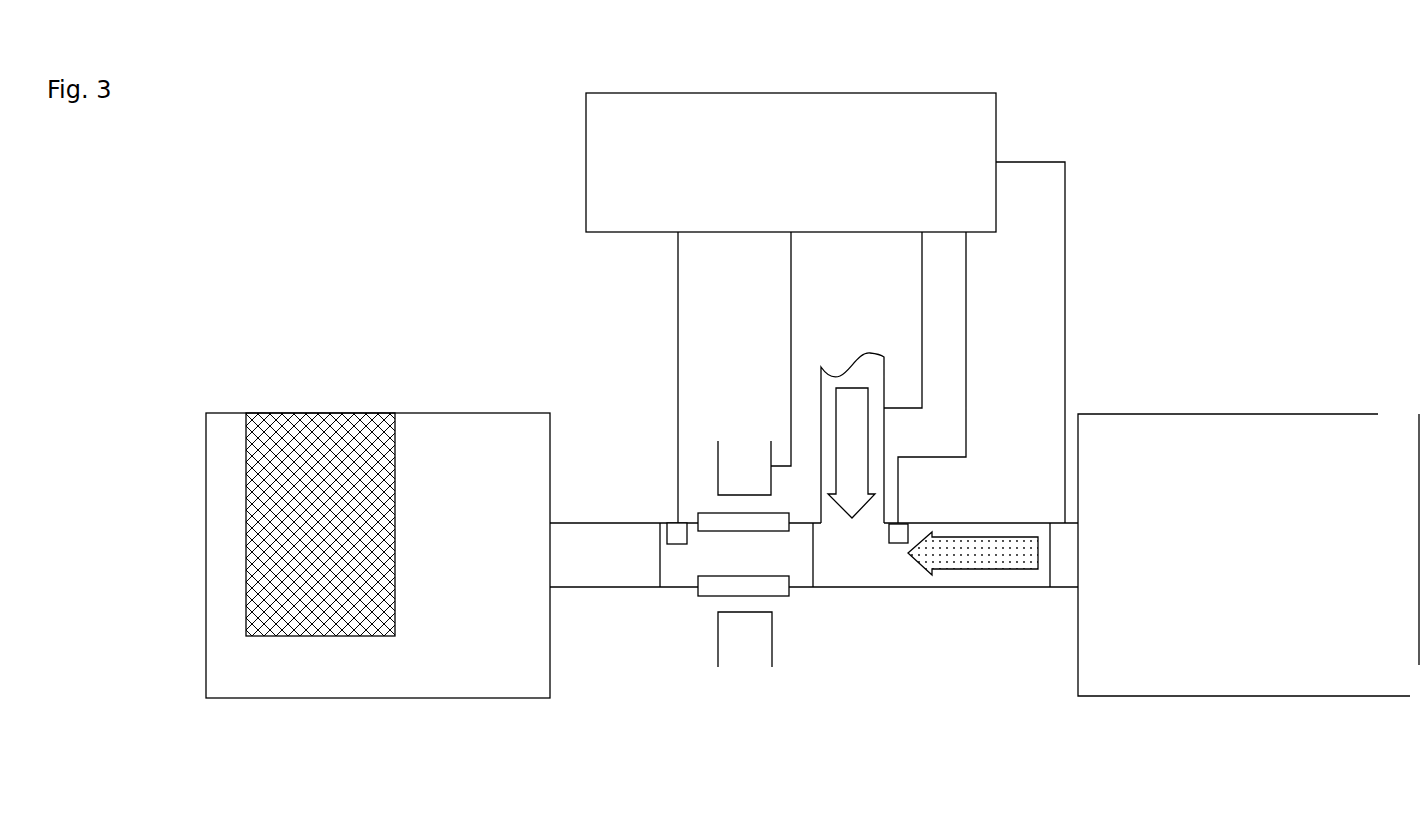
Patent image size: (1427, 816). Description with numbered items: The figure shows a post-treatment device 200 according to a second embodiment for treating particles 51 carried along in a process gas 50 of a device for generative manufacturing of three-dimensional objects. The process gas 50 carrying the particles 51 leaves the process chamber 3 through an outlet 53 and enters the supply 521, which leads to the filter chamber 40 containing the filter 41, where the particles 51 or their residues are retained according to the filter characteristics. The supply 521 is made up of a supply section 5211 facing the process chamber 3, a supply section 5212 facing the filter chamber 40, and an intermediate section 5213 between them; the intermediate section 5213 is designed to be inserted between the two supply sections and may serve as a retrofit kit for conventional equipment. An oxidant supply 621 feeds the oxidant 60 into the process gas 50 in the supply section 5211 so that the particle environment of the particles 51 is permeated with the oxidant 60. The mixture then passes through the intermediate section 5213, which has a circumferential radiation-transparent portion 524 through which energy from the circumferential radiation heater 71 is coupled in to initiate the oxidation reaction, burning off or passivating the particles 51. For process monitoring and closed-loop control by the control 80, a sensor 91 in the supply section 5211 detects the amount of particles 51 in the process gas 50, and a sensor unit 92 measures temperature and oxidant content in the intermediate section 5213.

The post-treatment device 200 is at (429, 55).
The process chamber 3 is at (1248, 555).
The filter chamber 40 is at (203, 605).
The filter 41 is at (280, 412).
The process gas 50 is at (930, 563).
The particles 51 is at (997, 550).
The outlet 53 is at (1075, 590).
The oxidant 60 is at (845, 423).
The radiation heater 71 is at (740, 463).
The control 80 is at (791, 162).
The sensor 91 is at (907, 523).
The sensor unit 92 is at (675, 522).
The supply 521 is at (574, 514).
The supply section facing the process chamber 5211 is at (988, 522).
The supply section facing the filter chamber 5212 is at (610, 588).
The intermediate section 5213 is at (807, 588).
The radiation-transparent portion 524 is at (727, 516).
The oxidant supply 621 is at (883, 392).